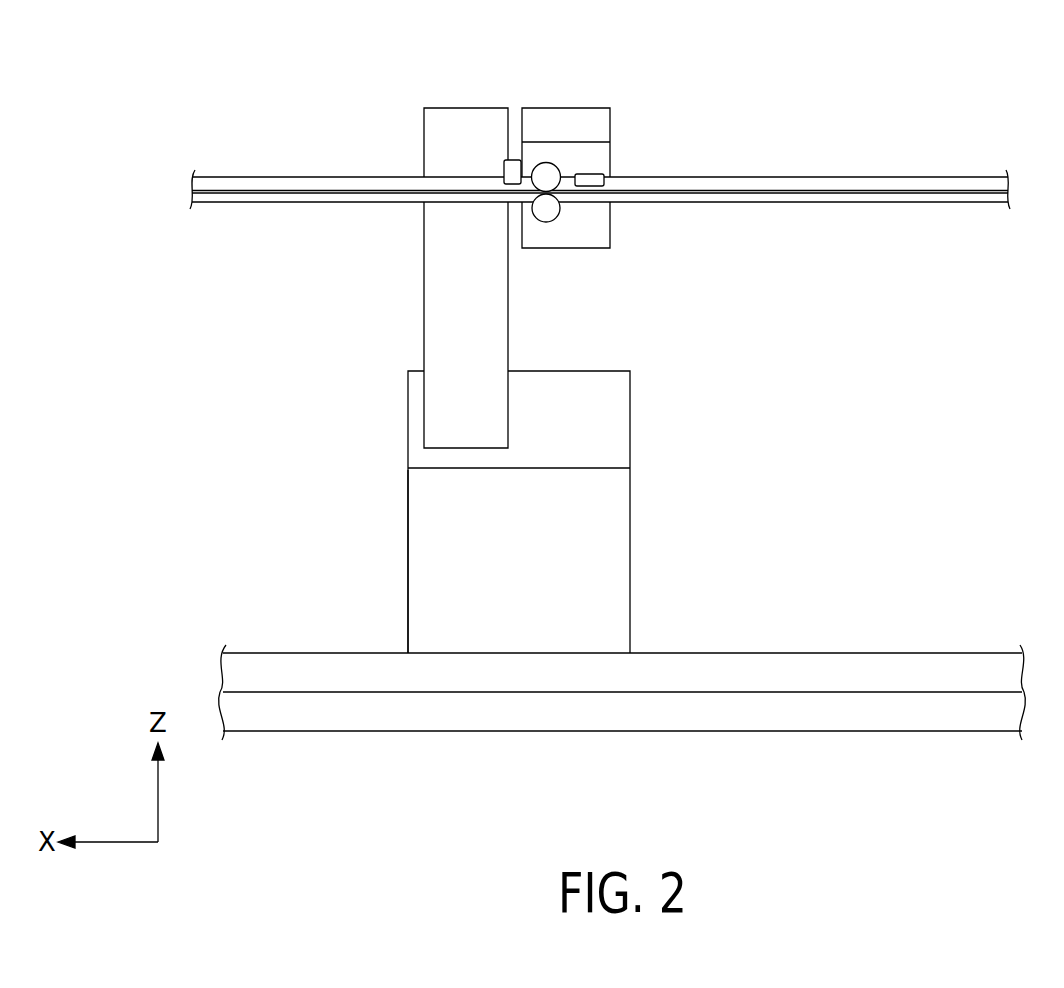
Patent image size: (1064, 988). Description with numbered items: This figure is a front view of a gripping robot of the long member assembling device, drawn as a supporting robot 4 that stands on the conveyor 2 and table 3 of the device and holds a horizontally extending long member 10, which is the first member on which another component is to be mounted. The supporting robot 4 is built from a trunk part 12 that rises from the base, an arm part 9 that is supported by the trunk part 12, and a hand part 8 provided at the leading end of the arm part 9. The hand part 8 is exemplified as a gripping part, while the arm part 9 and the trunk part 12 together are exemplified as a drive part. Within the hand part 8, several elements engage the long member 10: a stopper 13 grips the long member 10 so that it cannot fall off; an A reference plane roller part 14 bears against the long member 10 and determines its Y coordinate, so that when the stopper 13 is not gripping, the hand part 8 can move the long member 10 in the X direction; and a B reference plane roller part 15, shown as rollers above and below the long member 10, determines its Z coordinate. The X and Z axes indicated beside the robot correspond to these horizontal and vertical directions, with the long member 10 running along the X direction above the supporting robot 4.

The conveyor 2 is at (845, 722).
The table 3 is at (843, 660).
The supporting robot 4 is at (617, 513).
The hand part 8 is at (625, 163).
The arm part 9 is at (466, 117).
The long member 10 is at (903, 177).
The trunk part 12 is at (408, 542).
The stopper 13 is at (506, 164).
The A reference plane roller part 14 is at (590, 180).
The B reference plane roller part 15 is at (546, 223).